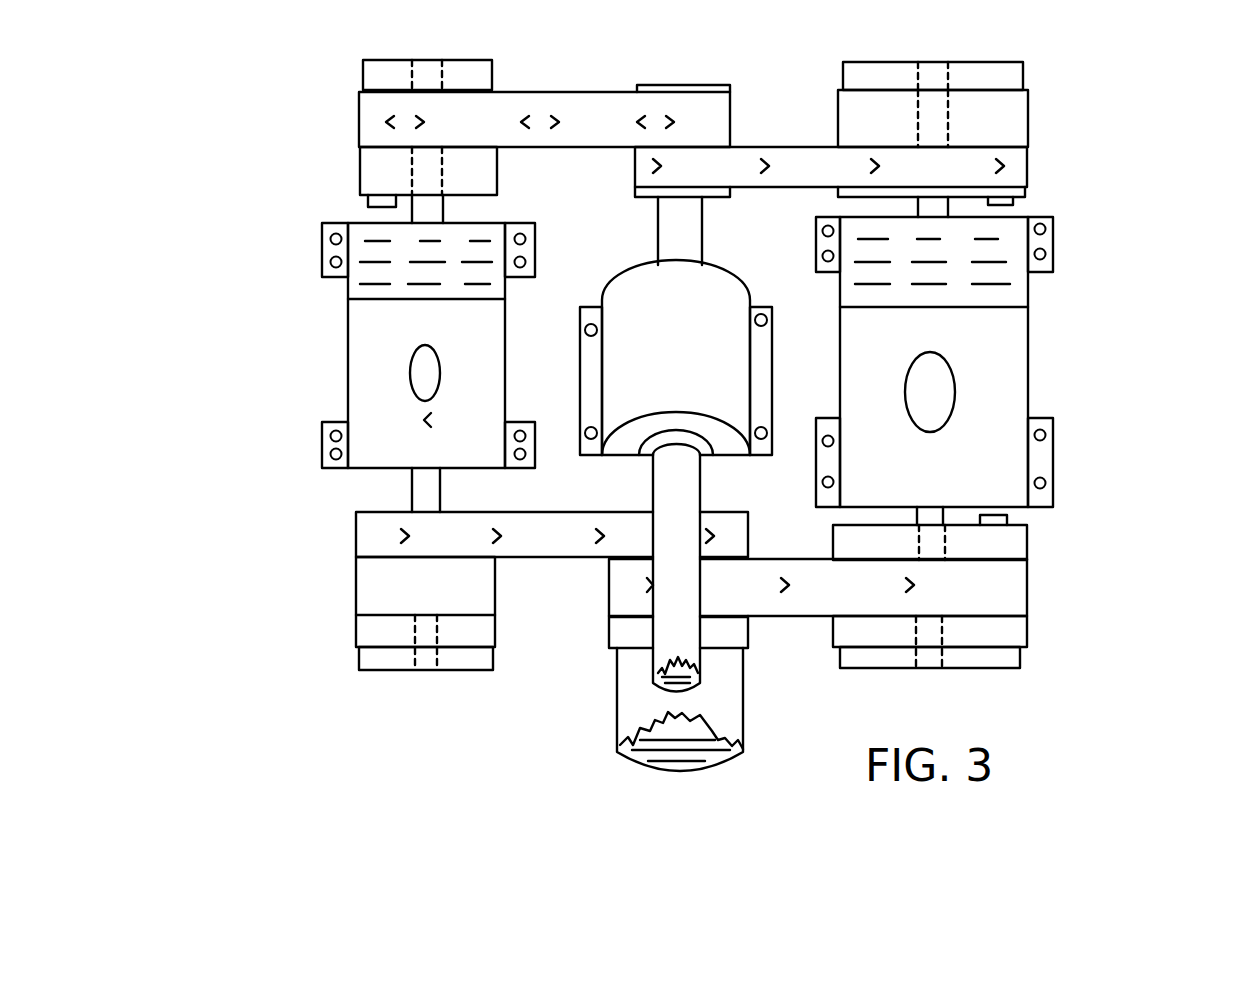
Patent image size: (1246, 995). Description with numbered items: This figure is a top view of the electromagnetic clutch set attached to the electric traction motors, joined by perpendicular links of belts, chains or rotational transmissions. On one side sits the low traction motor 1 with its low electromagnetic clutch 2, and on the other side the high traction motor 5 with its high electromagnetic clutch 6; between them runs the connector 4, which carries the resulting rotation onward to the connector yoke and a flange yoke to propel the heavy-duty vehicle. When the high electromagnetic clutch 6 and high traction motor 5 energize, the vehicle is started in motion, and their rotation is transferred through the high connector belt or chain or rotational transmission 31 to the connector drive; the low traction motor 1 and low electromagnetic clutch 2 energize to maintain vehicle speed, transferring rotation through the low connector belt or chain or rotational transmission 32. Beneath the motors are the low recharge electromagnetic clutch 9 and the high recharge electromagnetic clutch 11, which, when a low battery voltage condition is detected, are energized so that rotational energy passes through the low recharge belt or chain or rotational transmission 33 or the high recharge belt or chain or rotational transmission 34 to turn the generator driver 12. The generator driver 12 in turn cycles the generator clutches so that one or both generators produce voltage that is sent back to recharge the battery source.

The low traction motor 1 is at (348, 373).
The low electromagnetic clutch 2 is at (358, 162).
The connector 4 is at (700, 668).
The high traction motor 5 is at (1029, 377).
The high electromagnetic clutch 6 is at (1028, 105).
The low recharge electromagnetic clutch 9 is at (353, 642).
The high recharge electromagnetic clutch 11 is at (1027, 626).
The generator driver 12 is at (615, 678).
The high connector belt or chain or rotational transmission 31 is at (1028, 155).
The low connector belt or chain or rotational transmission 32 is at (358, 107).
The low recharge belt or chain or rotational transmission 33 is at (353, 538).
The high recharge belt or chain or rotational transmission 34 is at (1027, 580).